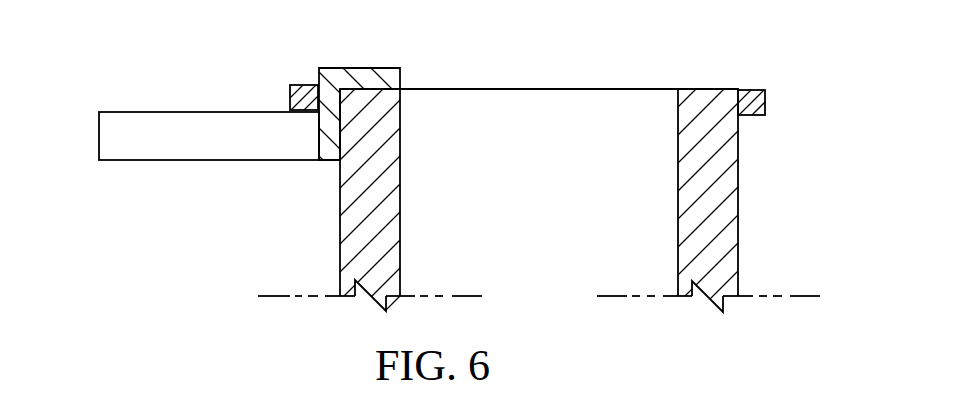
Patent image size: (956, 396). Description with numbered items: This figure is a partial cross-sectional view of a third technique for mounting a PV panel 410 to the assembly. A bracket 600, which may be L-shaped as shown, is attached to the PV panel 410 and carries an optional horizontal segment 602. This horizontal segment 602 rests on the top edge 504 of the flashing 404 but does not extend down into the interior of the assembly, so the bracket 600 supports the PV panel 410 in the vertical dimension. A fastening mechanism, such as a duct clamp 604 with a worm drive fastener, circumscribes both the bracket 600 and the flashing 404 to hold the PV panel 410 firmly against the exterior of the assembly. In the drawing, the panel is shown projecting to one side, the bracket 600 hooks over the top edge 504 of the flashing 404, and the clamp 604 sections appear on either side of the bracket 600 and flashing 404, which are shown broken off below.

The bracket 600 is at (106, 71).
The PV panel 410 is at (218, 147).
The duct clamp 604 is at (304, 83).
The horizontal segment 602 is at (360, 67).
The top edge 504 is at (368, 91).
The flashing 404 is at (738, 193).